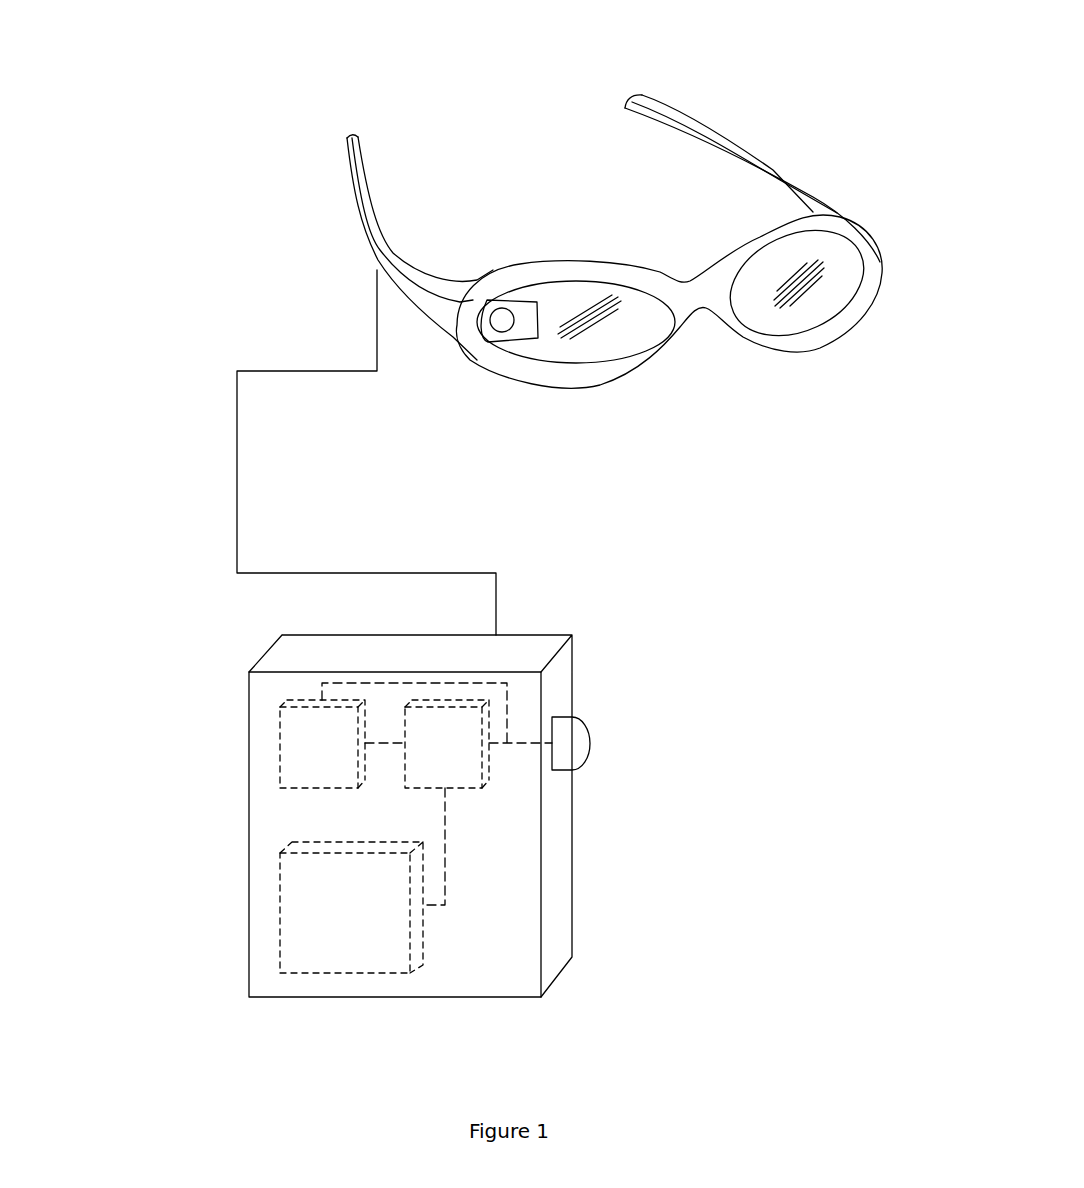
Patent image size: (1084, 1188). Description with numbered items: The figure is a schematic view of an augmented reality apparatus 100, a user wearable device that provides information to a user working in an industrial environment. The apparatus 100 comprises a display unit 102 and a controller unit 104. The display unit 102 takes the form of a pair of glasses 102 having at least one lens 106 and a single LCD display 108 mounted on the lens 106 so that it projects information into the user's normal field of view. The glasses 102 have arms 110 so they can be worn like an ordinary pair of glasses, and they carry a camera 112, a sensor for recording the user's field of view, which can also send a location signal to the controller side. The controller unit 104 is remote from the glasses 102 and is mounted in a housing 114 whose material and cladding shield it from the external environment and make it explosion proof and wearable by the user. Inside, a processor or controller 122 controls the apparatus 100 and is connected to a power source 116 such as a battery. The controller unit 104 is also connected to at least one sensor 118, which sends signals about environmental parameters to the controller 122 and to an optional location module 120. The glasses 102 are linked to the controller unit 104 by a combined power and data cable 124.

The augmented reality apparatus 100 is at (184, 176).
The display unit 102 is at (623, 100).
The controller unit 104 is at (572, 843).
The lens 106 is at (555, 338).
The LCD display 108 is at (507, 300).
The arms 110 is at (347, 140).
The camera 112 is at (488, 332).
The housing 114 is at (248, 947).
The power source 116 is at (365, 973).
The sensor 118 is at (588, 742).
The location module 120 is at (280, 758).
The controller 122 is at (483, 788).
The power cable 124 is at (236, 497).